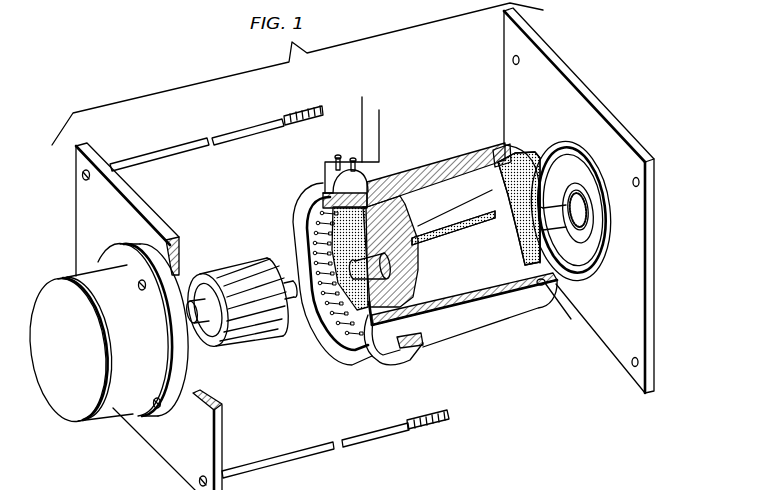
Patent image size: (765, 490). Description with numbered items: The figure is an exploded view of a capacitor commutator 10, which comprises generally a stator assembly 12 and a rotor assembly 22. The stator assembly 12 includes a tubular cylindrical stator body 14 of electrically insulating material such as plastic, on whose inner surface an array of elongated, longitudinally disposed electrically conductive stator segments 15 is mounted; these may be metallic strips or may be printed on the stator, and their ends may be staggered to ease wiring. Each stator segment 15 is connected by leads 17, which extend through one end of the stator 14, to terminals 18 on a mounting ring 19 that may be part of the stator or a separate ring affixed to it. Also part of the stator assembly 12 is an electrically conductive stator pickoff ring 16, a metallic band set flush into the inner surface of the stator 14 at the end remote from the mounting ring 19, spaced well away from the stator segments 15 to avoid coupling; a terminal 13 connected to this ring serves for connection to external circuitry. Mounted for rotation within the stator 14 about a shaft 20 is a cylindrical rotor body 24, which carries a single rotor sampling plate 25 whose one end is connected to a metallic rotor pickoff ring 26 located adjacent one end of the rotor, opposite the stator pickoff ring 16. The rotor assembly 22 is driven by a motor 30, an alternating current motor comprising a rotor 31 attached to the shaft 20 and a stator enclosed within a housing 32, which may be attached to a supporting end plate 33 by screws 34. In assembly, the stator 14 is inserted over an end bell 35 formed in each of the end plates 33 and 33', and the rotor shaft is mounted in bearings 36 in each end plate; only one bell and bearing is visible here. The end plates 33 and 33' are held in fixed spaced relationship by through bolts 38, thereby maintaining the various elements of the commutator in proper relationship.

The capacitor commutator 10 is at (474, 365).
The stator assembly 12 is at (311, 188).
The terminal 13 is at (541, 284).
The stator body 14 is at (298, 217).
The stator segments 15 is at (318, 275).
The stator pickoff ring 16 is at (506, 147).
The leads 17 is at (378, 135).
The terminals 18 is at (378, 165).
The mounting ring 19 is at (330, 186).
The shaft 20 is at (380, 273).
The rotor assembly 22 is at (455, 257).
The rotor body 24 is at (497, 267).
The rotor sampling plate 25 is at (457, 225).
The rotor pickoff ring 26 is at (500, 195).
The motor 30 is at (198, 347).
The rotor 31 is at (243, 340).
The housing 32 is at (110, 395).
The end plate 33 is at (149, 316).
The end plate 33' is at (599, 200).
The screws 34 is at (157, 412).
The end bell 35 is at (603, 226).
The bearings 36 is at (570, 194).
The through bolts 38 is at (167, 147).